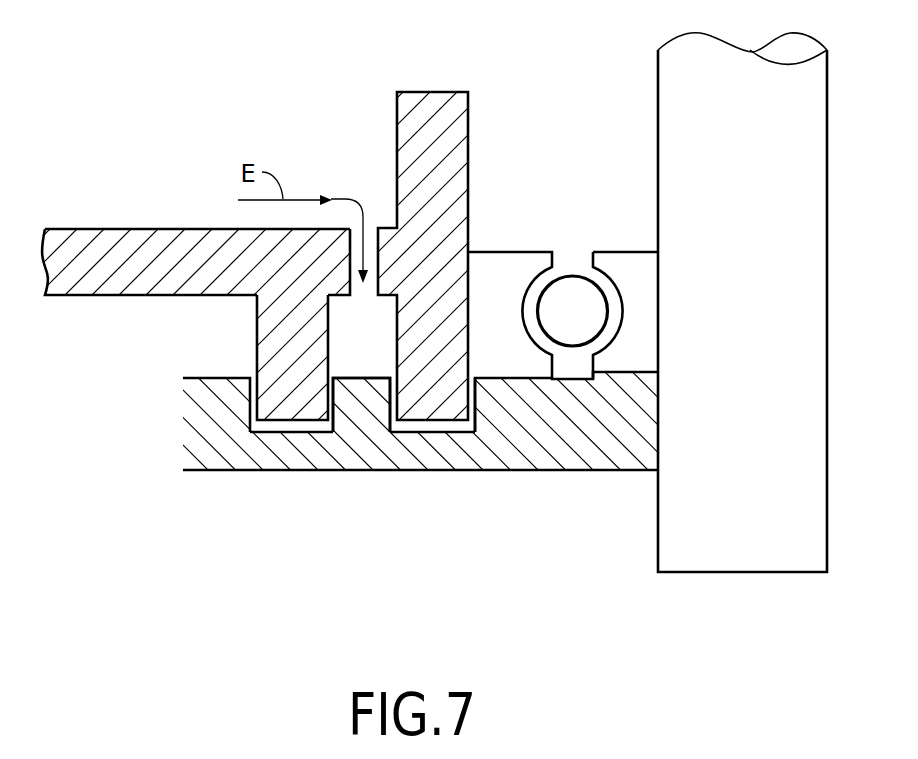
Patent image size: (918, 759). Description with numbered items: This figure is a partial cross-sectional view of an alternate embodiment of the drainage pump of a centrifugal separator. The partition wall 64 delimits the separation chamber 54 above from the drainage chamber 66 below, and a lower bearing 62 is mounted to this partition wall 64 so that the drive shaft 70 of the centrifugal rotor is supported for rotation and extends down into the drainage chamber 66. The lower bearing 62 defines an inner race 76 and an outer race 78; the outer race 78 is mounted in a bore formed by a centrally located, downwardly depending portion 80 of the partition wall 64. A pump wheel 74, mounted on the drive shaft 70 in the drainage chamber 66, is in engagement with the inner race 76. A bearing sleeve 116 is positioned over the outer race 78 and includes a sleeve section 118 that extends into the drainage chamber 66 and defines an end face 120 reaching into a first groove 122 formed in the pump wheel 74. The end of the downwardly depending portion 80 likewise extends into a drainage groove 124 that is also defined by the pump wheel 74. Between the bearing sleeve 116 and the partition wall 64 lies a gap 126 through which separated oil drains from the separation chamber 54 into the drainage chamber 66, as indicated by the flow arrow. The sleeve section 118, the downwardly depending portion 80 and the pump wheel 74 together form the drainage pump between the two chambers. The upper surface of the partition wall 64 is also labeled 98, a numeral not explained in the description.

The separation chamber 54 is at (512, 68).
The lower bearing 62 is at (571, 239).
The partition wall 64 is at (410, 275).
The drainage chamber 66 is at (428, 582).
The drive shaft 70 is at (688, 574).
The pump wheel 74 is at (415, 443).
The inner race 76 is at (633, 253).
The outer race 78 is at (506, 253).
The downwardly depending portion 80 is at (257, 347).
The top surface 98 is at (123, 228).
The bearing sleeve 116 is at (421, 82).
The sleeve section 118 is at (372, 384).
The end face 120 is at (474, 438).
The first groove 122 is at (437, 427).
The drainage groove 124 is at (285, 427).
The gap 126 is at (374, 282).